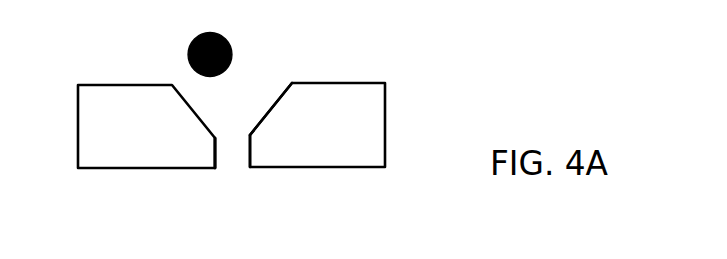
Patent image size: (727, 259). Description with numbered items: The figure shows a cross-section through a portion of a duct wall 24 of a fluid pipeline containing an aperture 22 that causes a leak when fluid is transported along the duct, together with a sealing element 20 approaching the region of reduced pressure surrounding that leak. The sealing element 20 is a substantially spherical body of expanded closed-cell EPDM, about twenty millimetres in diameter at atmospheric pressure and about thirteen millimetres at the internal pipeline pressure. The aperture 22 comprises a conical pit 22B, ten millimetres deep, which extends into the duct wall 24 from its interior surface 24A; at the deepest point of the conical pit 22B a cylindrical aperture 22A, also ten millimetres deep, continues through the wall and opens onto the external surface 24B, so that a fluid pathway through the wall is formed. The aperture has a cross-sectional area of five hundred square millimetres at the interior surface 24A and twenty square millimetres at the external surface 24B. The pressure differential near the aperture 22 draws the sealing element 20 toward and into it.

The sealing element 20 is at (190, 45).
The aperture 22 is at (244, 185).
The cylindrical aperture 22A is at (230, 158).
The conical pit 22B is at (245, 90).
The duct wall 24 is at (267, 131).
The interior surface 24A is at (365, 83).
The external surface 24B is at (121, 169).